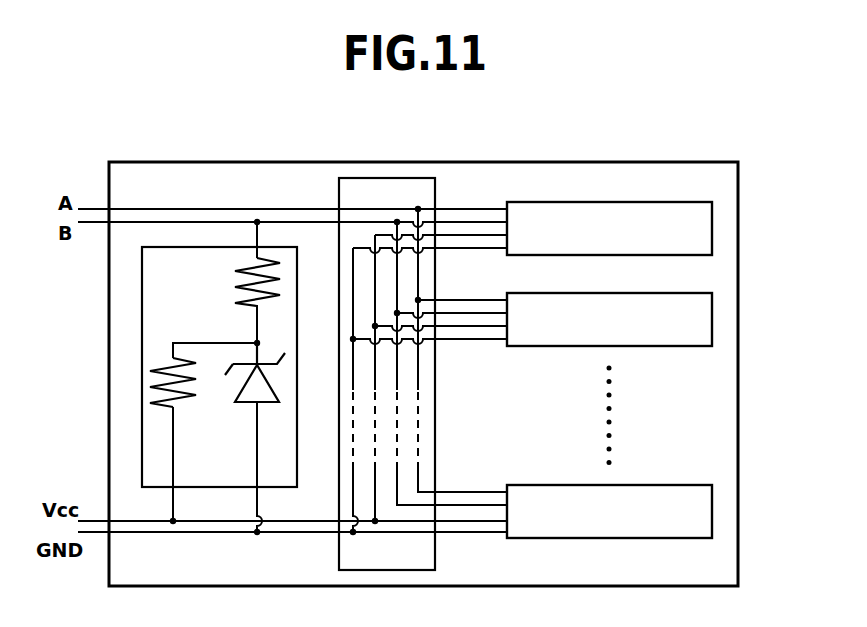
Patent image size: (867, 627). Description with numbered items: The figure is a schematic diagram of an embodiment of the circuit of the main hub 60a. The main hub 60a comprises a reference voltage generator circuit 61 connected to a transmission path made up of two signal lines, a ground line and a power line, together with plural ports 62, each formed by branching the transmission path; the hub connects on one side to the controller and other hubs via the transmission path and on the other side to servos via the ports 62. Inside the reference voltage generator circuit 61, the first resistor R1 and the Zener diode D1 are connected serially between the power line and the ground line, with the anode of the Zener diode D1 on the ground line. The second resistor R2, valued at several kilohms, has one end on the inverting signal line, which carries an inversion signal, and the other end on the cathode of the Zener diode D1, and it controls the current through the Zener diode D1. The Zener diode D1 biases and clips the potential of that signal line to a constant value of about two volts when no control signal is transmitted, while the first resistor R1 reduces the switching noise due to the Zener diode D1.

The main hub 60a is at (653, 162).
The reference voltage generator circuit 61 is at (172, 377).
The port 62 is at (712, 228).
The first resistor R1 is at (153, 354).
The second resistor R2 is at (218, 278).
The Zener diode D1 is at (241, 389).